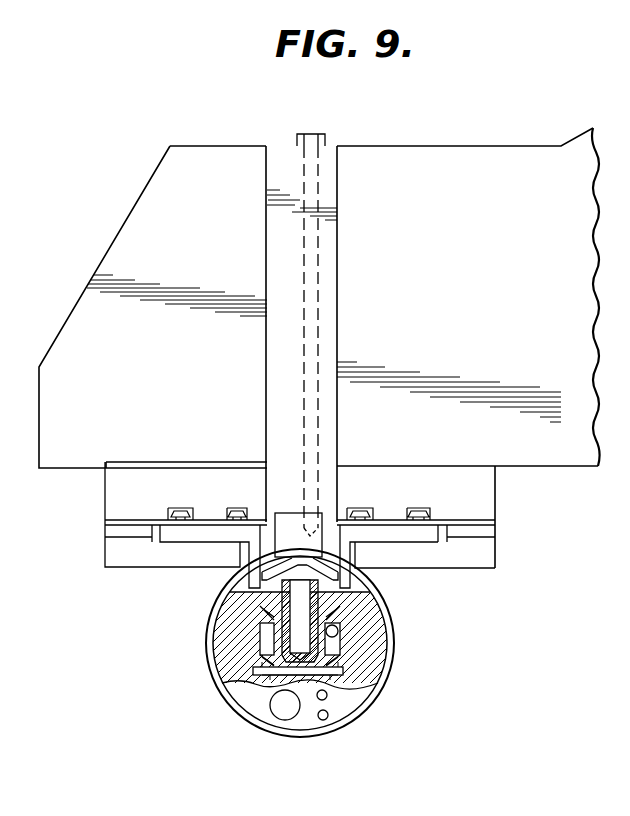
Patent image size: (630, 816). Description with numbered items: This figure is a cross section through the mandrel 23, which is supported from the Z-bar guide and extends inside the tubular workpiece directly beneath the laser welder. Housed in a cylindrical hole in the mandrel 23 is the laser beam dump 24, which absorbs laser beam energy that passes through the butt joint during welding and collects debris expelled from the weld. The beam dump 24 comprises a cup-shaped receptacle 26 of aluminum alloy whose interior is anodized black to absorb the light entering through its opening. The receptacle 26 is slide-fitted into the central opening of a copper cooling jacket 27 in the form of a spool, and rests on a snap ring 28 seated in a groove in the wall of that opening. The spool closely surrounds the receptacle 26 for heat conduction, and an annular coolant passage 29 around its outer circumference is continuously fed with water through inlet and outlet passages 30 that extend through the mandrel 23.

The mandrel 23 is at (345, 722).
The laser beam dump 24 is at (352, 650).
The receptacle 26 is at (262, 612).
The cooling jacket 27 is at (258, 683).
The snap ring 28 is at (368, 715).
The annular coolant passage 29 is at (262, 646).
The inlet and outlet passages 30 is at (322, 721).